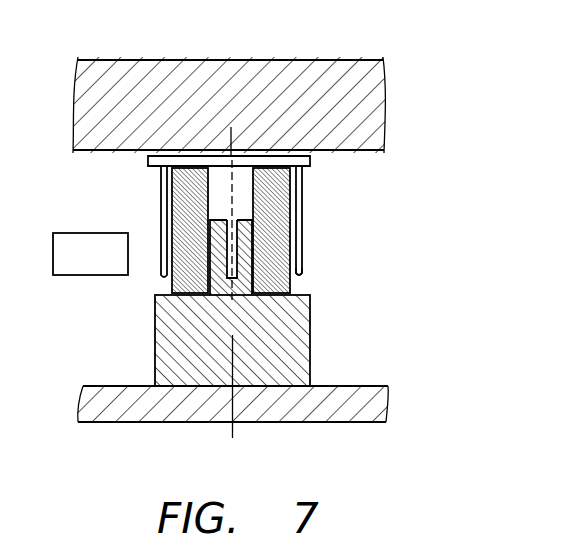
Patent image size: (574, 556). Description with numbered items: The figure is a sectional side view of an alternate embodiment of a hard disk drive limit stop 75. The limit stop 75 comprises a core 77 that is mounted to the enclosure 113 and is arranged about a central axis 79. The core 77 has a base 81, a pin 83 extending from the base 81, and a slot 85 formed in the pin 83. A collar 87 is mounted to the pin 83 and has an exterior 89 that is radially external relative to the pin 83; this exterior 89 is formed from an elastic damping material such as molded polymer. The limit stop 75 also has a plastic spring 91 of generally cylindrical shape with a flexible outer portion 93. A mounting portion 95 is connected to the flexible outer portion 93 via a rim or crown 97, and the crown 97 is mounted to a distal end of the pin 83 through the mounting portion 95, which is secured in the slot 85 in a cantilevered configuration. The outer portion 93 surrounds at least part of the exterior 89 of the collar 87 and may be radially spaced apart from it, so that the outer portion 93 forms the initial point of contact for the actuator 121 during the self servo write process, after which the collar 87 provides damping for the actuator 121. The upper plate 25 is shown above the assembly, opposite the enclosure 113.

The upper plate 25 is at (348, 64).
The limit stop 75 is at (412, 213).
The core 77 is at (280, 333).
The central axis 79 is at (232, 404).
The base 81 is at (310, 366).
The pin 83 is at (241, 150).
The slot 85 is at (240, 218).
The collar 87 is at (277, 237).
The exterior 89 is at (308, 189).
The plastic spring 91 is at (150, 188).
The flexible outer portion 93 is at (299, 263).
The mounting portion 95 is at (244, 160).
The crown 97 is at (229, 216).
The enclosure 113 is at (93, 392).
The actuator 121 is at (100, 233).